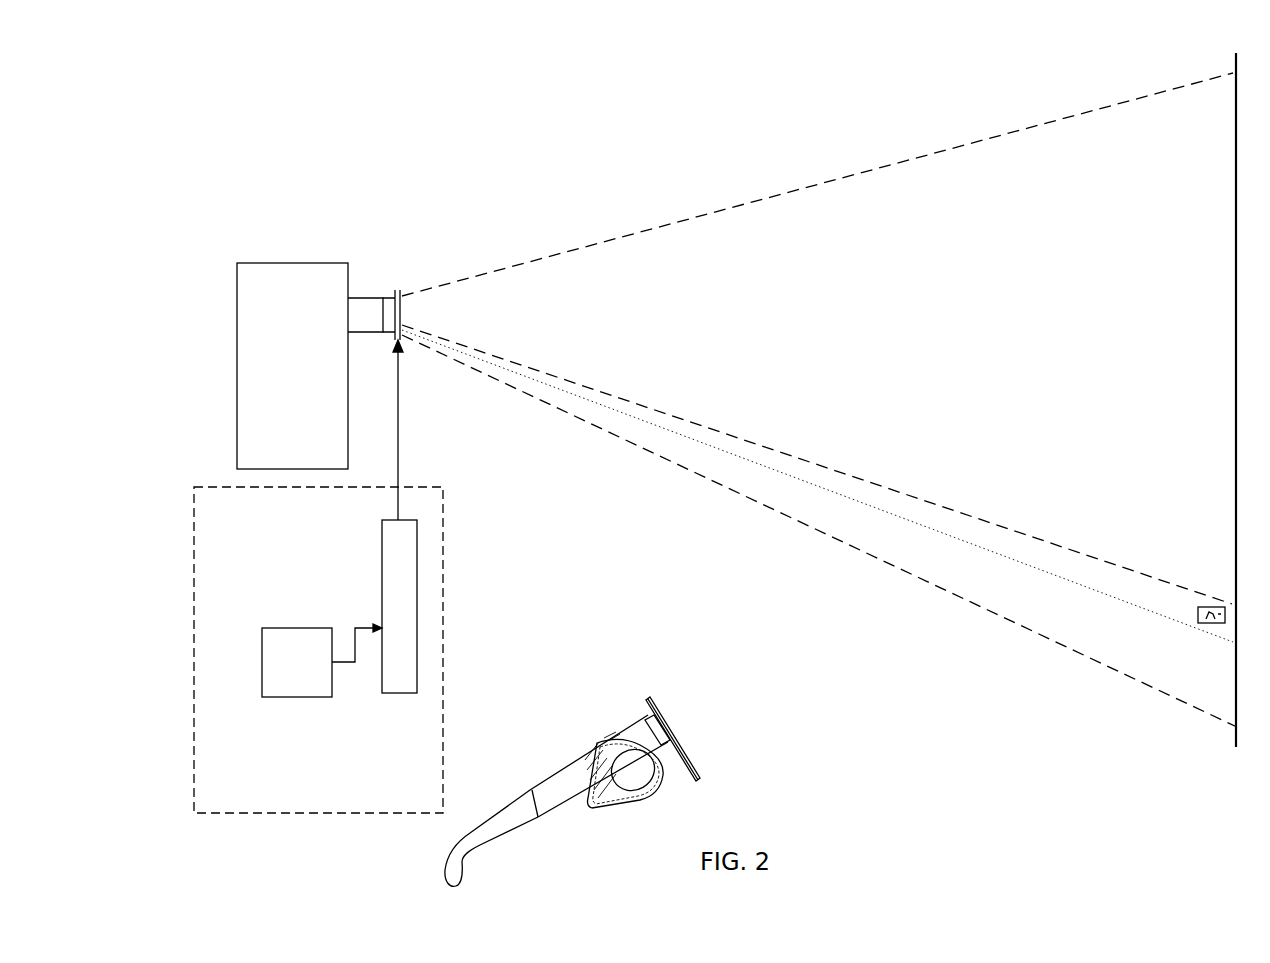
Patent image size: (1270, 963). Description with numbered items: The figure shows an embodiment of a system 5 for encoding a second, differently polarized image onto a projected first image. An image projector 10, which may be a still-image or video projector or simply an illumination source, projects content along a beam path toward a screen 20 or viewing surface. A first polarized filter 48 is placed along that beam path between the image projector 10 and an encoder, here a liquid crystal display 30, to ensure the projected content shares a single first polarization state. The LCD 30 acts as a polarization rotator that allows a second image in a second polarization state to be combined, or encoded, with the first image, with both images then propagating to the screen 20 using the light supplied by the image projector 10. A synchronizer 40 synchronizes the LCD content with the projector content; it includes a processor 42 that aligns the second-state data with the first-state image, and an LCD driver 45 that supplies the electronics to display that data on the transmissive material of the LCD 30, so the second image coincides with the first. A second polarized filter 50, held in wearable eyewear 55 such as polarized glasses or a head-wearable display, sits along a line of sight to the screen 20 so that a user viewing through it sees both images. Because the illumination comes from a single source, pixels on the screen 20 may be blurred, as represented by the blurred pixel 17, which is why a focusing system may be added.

The system 5 is at (597, 87).
The image projector 10 is at (236, 313).
The first polarized filter 48 is at (393, 300).
The liquid crystal display (encoder) 30 is at (402, 290).
The screen 20 is at (1236, 57).
The blurred pixel 17 is at (1210, 606).
The synchronizer 40 is at (443, 487).
The LCD driver 45 is at (417, 552).
The processor 42 is at (262, 656).
The second polarized filter 50 is at (584, 760).
The eyewear 55 is at (552, 772).